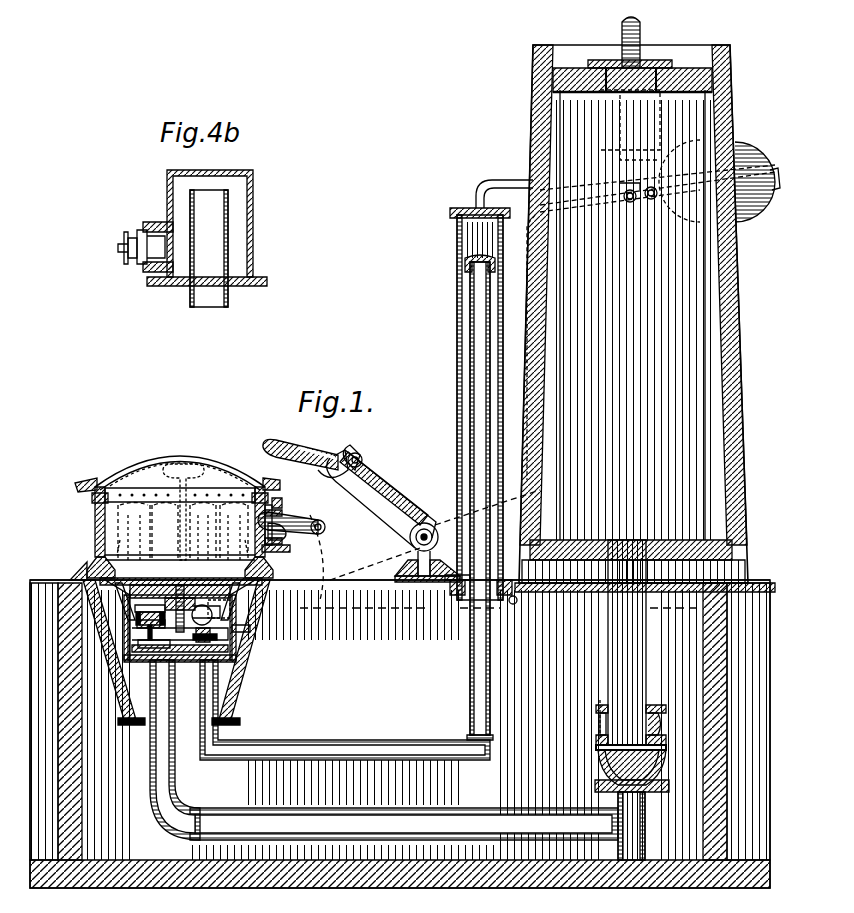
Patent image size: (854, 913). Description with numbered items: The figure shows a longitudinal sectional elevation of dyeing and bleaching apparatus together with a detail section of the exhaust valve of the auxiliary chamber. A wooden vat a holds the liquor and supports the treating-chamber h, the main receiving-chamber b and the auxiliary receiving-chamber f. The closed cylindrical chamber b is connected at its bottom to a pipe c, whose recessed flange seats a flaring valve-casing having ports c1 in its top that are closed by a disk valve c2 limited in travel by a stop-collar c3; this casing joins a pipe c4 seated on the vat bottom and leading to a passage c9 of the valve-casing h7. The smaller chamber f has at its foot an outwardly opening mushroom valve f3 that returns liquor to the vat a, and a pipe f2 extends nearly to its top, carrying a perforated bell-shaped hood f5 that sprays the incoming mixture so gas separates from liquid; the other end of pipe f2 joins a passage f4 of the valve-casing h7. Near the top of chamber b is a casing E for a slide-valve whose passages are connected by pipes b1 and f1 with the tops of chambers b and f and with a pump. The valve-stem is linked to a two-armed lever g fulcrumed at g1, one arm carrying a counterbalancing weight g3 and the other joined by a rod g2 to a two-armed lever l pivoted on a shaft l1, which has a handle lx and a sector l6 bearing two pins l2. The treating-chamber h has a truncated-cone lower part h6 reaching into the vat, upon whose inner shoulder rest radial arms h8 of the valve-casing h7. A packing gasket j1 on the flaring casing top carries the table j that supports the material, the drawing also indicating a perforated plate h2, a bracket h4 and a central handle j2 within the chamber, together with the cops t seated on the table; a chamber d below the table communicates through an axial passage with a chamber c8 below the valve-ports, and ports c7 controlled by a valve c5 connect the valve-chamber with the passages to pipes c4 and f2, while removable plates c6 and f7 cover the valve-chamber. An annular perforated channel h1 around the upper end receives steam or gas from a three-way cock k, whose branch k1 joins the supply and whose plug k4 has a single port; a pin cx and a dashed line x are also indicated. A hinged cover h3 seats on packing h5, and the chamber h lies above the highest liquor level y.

In FIG. 1, the vat a is at (400, 734).
In FIG. 1, the main receiving-chamber b is at (645, 341).
In FIG. 1, the pipe b1 is at (642, 22).
In FIG. 1, the casing E is at (665, 125).
In FIG. 1, the pipe c is at (627, 642).
In FIG. 1, the ports c1 is at (622, 771).
In FIG. 1, the disk valve c2 is at (660, 742).
In FIG. 1, the stop-collar c3 is at (632, 725).
In FIG. 1, the pipe c4 is at (389, 760).
In FIG. 1, the valve c5 is at (180, 628).
In FIG. 1, the removable plate c6 is at (160, 602).
In FIG. 1, the ports c7 is at (200, 628).
In FIG. 1, the chamber c8 is at (130, 620).
In FIG. 1, the passage c9 is at (130, 650).
In FIG. 1, the chamber d is at (181, 588).
In FIG. 4B, the auxiliary receiving-chamber f is at (175, 195).
In FIG. 1, the auxiliary receiving-chamber f is at (455, 385).
In FIG. 1, the pipe f1 is at (490, 178).
In FIG. 4B, the pipe f2 is at (209, 248).
In FIG. 1, the pipe f2 is at (468, 430).
In FIG. 4B, the mushroom valve f3 is at (140, 278).
In FIG. 1, the mushroom valve f3 is at (445, 590).
In FIG. 1, the passage f4 is at (512, 597).
In FIG. 1, the bell-shaped hood f5 is at (495, 265).
In FIG. 1, the removable plate f7 is at (238, 592).
In FIG. 1, the two-armed lever g is at (662, 200).
In FIG. 1, the fulcrum g1 is at (651, 202).
In FIG. 1, the rod g2 is at (530, 355).
In FIG. 1, the weight g3 is at (735, 142).
In FIG. 1, the pin cx is at (643, 178).
In FIG. 1, the treating-chamber h is at (92, 525).
In FIG. 1, the annular channel h1 is at (92, 498).
In FIG. 1, the perforated plate h2 is at (180, 495).
In FIG. 1, the cover h3 is at (175, 455).
In FIG. 1, the bracket h4 is at (290, 520).
In FIG. 1, the packing h5 is at (180, 475).
In FIG. 1, the lower part h6 is at (120, 675).
In FIG. 1, the valve-casing h7 is at (174, 620).
In FIG. 1, the radial arms h8 is at (180, 621).
In FIG. 1, the table j is at (179, 551).
In FIG. 1, the packing gasket j1 is at (82, 562).
In FIG. 1, the handle j2 is at (204, 470).
In FIG. 1, the three-way cock k is at (281, 534).
In FIG. 1, the branch k1 is at (282, 503).
In FIG. 1, the plug k4 is at (290, 535).
In FIG. 1, the two-armed lever l is at (390, 505).
In FIG. 1, the shaft l1 is at (424, 533).
In FIG. 1, the pins l2 is at (362, 460).
In FIG. 1, the sector l6 is at (345, 447).
In FIG. 1, the handle lx is at (300, 443).
In FIG. 1, the bottles t is at (183, 532).
In FIG. 1, the line x is at (601, 709).
In FIG. 1, the level y is at (500, 603).